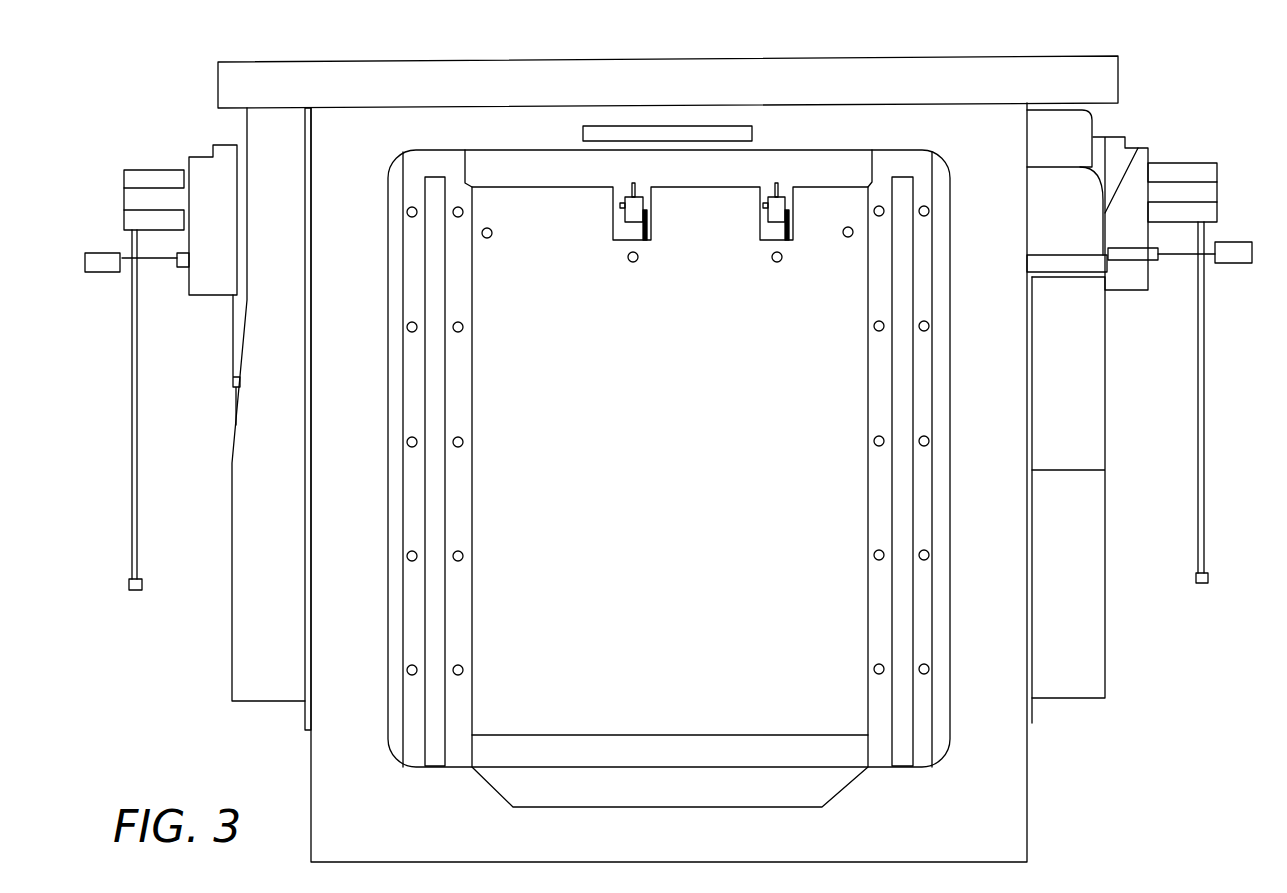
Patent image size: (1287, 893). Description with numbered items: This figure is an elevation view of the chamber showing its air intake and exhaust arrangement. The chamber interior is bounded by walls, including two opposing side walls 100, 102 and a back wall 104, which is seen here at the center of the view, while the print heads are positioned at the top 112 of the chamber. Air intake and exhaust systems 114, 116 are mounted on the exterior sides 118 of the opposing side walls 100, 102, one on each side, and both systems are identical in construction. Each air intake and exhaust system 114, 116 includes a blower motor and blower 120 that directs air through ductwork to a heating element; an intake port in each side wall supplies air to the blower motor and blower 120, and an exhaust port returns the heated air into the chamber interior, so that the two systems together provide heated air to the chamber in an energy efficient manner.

The side wall 100 is at (1030, 808).
The side wall 102 is at (308, 773).
The back wall 104 is at (712, 424).
The top 112 is at (260, 60).
The air intake and exhaust system 114 is at (1108, 450).
The air intake and exhaust system 116 is at (230, 548).
The exterior sides 118 is at (311, 738).
The blower motor and blower 120 is at (182, 160).